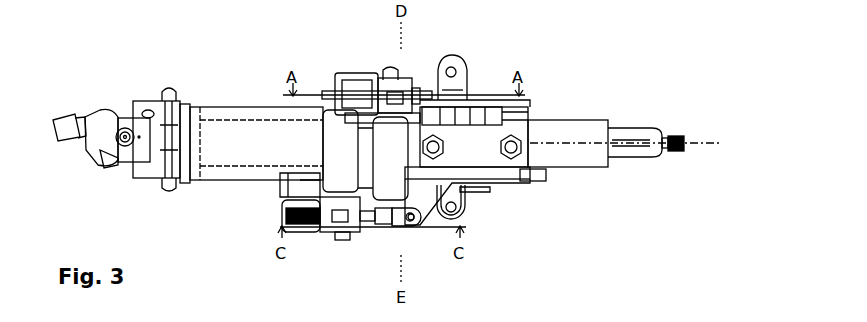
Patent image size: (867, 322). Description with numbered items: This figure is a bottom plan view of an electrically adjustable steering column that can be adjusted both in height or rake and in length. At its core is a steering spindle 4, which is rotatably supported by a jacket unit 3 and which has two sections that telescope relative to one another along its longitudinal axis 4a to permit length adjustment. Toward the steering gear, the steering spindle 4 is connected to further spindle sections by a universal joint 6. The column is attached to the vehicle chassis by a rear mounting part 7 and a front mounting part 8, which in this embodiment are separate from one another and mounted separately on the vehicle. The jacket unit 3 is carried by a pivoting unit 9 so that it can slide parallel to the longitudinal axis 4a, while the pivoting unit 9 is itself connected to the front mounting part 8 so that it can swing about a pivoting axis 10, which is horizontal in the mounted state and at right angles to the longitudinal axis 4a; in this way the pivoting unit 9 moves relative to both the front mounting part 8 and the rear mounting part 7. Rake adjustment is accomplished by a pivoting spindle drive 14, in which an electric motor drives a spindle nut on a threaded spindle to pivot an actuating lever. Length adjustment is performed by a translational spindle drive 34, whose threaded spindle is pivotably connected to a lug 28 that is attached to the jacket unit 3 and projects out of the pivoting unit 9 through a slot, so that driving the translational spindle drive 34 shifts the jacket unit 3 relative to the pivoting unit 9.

The jacket unit 3 is at (548, 132).
The steering spindle 4 is at (622, 137).
The longitudinal axis 4a is at (695, 138).
The universal joint 6 is at (122, 121).
The rear mounting part 7 is at (458, 55).
The front mounting part 8 is at (140, 104).
The pivoting unit 9 is at (237, 184).
The pivoting axis 10 is at (170, 189).
The pivoting spindle drive 14 is at (381, 71).
The lug 28 is at (470, 196).
The translational spindle drive 34 is at (337, 247).